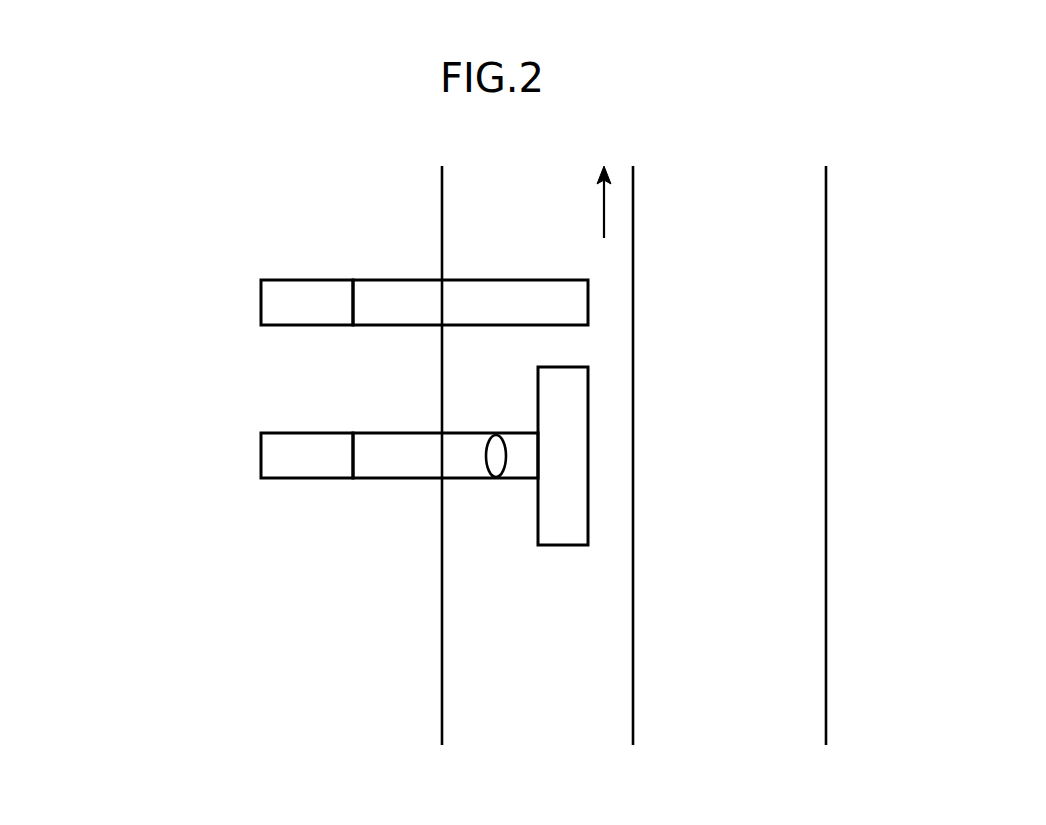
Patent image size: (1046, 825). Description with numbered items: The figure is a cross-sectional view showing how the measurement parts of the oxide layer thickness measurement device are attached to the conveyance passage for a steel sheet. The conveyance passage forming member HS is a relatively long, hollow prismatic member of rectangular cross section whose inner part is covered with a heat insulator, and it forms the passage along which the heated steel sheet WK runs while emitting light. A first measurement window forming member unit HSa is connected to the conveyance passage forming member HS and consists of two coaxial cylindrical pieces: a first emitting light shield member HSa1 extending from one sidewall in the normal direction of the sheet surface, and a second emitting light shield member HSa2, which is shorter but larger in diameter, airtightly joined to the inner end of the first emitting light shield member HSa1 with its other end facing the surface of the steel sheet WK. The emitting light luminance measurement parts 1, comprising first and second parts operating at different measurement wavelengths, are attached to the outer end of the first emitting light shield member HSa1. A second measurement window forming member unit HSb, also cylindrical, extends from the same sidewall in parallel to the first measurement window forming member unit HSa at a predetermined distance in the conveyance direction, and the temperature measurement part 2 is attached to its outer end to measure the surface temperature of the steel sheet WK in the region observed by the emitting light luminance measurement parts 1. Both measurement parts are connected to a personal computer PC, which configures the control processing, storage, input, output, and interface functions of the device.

The temperature measurement part 2 is at (305, 280).
The second measurement window forming member unit HSb is at (385, 280).
The emitting light luminance measurement parts 1 is at (303, 433).
The first emitting light shield member HSa1 is at (408, 478).
The second emitting light shield member HSa2 is at (538, 514).
The first measurement window forming member unit HSa is at (270, 495).
The personal computer PC is at (261, 310).
The steel sheet WK is at (634, 702).
The conveyance passage forming member HS is at (827, 279).